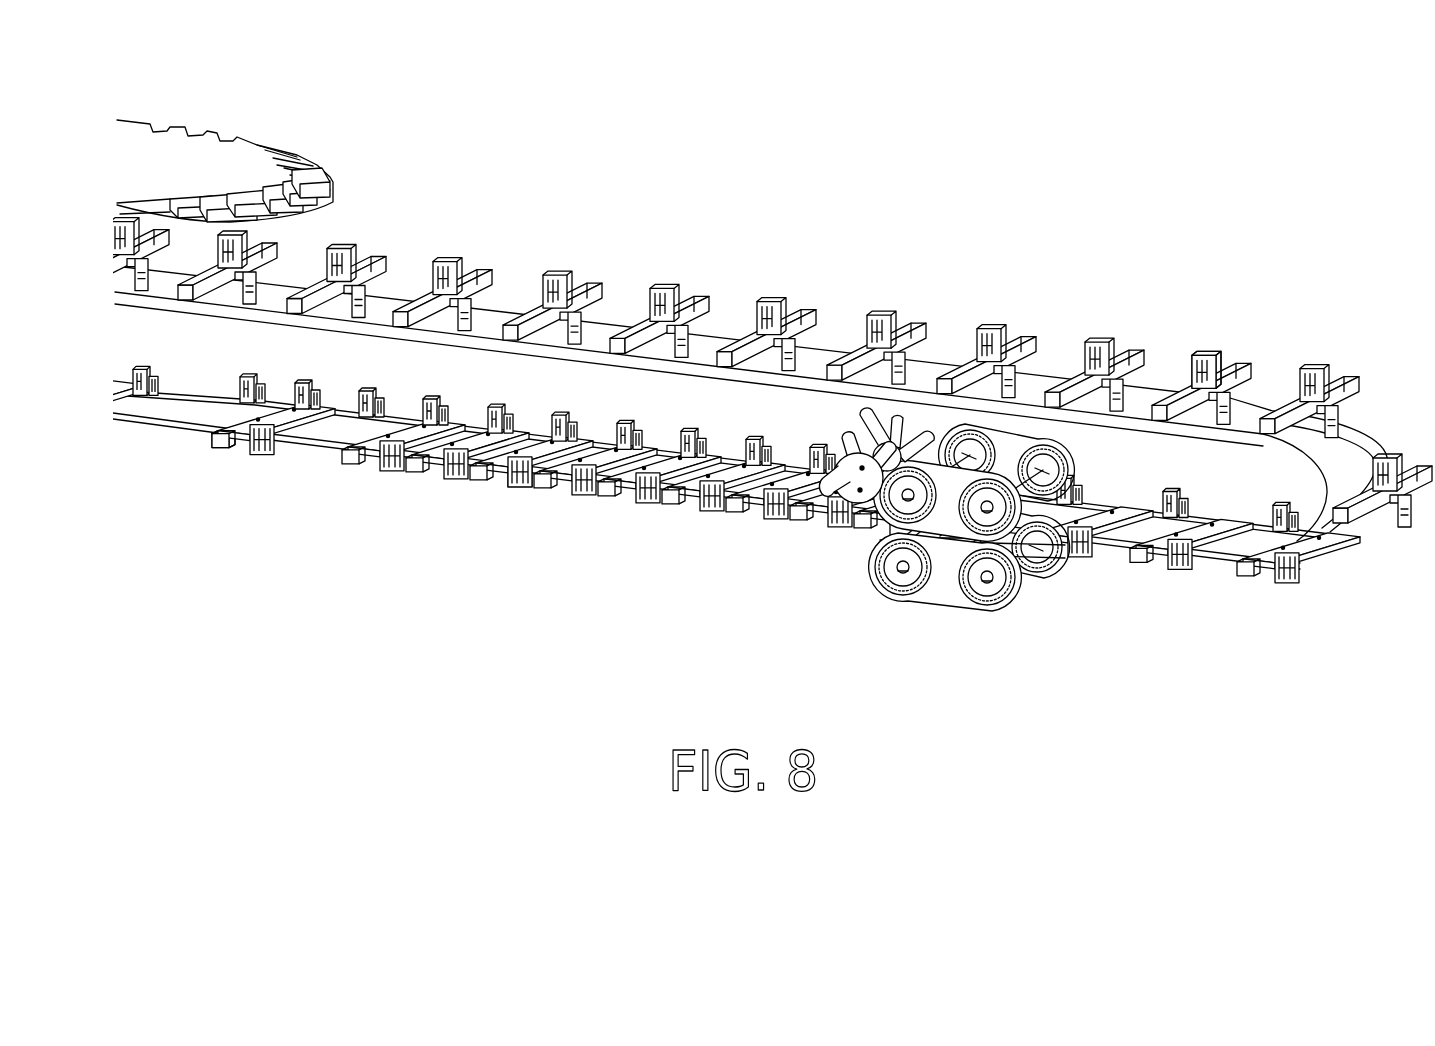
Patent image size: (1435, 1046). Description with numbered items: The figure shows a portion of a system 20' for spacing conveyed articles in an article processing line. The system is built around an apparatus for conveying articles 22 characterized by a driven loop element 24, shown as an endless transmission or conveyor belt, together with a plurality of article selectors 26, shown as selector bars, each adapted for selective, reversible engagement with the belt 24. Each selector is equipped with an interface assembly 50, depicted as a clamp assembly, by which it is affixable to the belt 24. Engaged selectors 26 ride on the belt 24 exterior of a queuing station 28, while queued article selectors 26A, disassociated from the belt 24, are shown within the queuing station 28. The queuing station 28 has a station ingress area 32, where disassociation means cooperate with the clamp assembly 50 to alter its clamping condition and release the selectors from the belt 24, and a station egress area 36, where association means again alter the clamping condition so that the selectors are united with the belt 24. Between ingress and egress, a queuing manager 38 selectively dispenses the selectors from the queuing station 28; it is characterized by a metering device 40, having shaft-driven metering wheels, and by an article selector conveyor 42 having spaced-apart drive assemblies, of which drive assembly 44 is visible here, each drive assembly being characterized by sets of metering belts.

The apparatus for conveying articles 22 is at (388, 216).
The article selectors 26 is at (706, 299).
The interface assembly 50 is at (1190, 362).
The metering device 40 is at (838, 421).
The article selector conveyor 42 is at (1080, 468).
The driven loop element 24 is at (316, 433).
The station ingress area 32 is at (364, 481).
The queued article selectors 26A is at (473, 484).
The queuing station 28 is at (514, 518).
The system for spacing conveyed articles 20' is at (721, 539).
The station egress area 36 is at (862, 546).
The drive assembly 44 is at (905, 600).
The queuing manager 38 is at (936, 618).